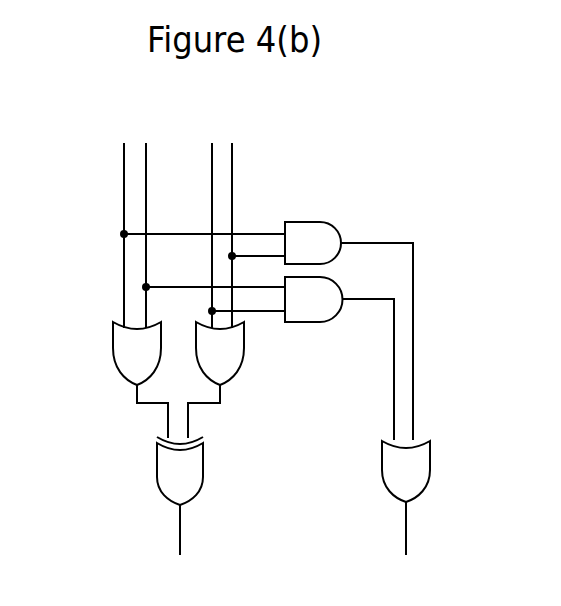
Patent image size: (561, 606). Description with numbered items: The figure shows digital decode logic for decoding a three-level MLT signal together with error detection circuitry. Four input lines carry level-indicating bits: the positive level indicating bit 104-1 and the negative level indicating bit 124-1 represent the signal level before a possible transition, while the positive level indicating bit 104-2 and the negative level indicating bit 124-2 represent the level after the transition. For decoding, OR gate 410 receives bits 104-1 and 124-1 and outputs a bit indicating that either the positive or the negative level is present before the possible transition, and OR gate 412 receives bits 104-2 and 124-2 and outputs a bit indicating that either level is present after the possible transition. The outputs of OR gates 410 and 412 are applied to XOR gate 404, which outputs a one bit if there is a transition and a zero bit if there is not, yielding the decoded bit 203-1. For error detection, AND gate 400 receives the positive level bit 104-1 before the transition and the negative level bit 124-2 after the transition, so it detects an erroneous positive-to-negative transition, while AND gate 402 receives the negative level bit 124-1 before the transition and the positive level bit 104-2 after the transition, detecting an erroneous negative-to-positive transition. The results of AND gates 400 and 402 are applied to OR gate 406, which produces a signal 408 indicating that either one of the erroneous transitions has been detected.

The positive level indicating bit before transition 104-1 is at (124, 164).
The negative level indicating bit before transition 124-1 is at (146, 205).
The positive level indicating bit after transition 104-2 is at (212, 170).
The negative level indicating bit after transition 124-2 is at (232, 203).
The AND gate 400 is at (336, 228).
The AND gate 402 is at (338, 284).
The XOR gate 404 is at (203, 457).
The OR gate 406 is at (431, 452).
The error signal 408 is at (407, 528).
The OR gate 410 is at (113, 343).
The OR gate 412 is at (245, 347).
The decoded bit 203-1 is at (181, 533).